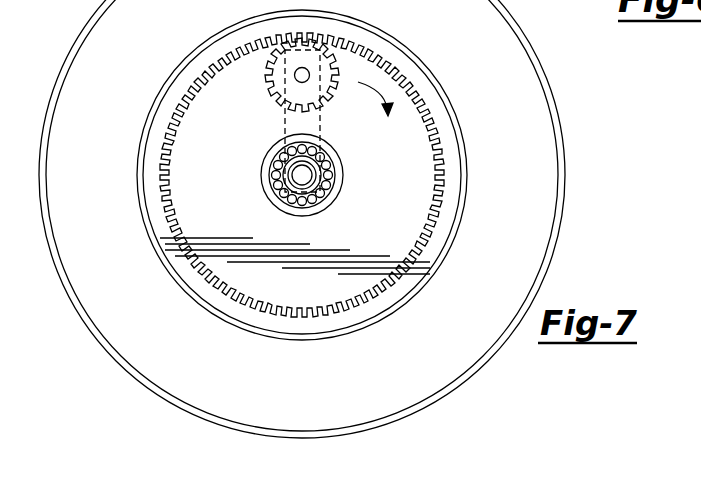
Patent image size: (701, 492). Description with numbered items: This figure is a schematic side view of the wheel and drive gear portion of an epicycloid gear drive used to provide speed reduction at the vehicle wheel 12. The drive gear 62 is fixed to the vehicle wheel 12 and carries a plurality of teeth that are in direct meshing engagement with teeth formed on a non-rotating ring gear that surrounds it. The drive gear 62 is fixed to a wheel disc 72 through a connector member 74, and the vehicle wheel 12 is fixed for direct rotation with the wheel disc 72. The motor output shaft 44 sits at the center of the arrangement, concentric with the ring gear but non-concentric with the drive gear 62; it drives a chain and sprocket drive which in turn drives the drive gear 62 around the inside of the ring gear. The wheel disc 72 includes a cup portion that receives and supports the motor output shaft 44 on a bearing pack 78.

The vehicle wheel 12 is at (571, 179).
The wheel disc 72 is at (419, 72).
The drive gear 62 is at (268, 70).
The connector member 74 is at (307, 78).
The bearing pack 78 is at (338, 170).
The motor output shaft 44 is at (310, 178).